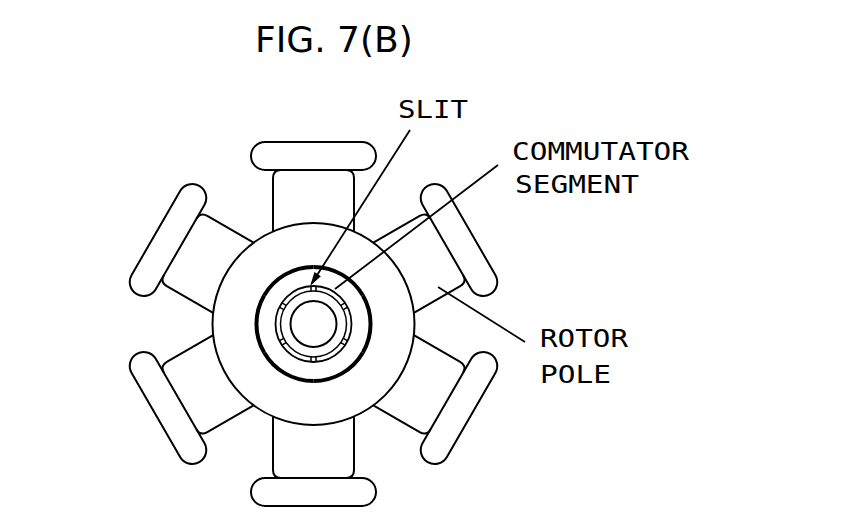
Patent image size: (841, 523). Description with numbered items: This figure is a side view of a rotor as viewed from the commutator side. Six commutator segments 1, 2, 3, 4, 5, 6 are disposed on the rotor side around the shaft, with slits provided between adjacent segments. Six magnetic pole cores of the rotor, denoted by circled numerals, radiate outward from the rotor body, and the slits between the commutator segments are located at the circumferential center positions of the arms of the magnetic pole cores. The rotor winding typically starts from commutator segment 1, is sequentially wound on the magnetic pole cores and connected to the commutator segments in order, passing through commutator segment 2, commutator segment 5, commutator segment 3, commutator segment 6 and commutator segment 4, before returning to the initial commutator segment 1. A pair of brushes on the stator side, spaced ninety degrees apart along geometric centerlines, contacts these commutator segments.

The commutator segment 1 is at (334, 289).
The commutator segment 2 is at (294, 289).
The commutator segment 3 is at (274, 324).
The commutator segment 4 is at (294, 359).
The commutator segment 5 is at (334, 359).
The commutator segment 6 is at (354, 324).